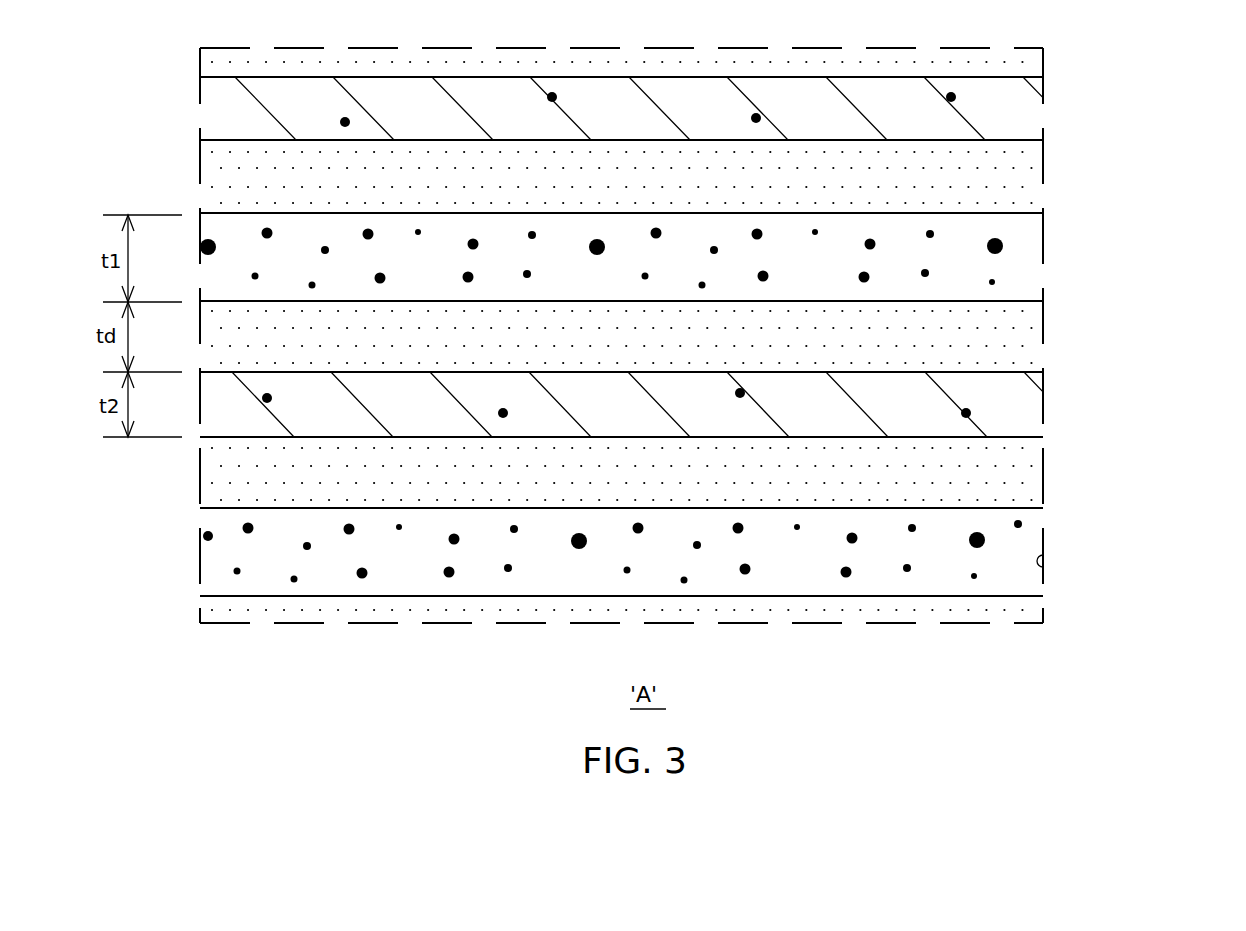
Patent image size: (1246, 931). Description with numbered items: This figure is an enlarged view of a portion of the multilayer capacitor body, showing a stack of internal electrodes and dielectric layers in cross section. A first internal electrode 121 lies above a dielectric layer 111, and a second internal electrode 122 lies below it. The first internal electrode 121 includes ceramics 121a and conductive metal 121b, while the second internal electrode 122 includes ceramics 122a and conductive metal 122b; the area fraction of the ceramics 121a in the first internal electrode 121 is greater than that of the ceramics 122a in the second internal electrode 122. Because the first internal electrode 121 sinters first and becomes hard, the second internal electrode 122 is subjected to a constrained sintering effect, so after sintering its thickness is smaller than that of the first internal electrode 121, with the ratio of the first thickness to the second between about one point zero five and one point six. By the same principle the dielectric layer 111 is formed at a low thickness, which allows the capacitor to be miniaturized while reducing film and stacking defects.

The dielectric layer 111 is at (1022, 334).
The first internal electrode 121 is at (1183, 203).
The ceramics 121a is at (1003, 245).
The conductive metal 121b is at (1020, 274).
The second internal electrode 122 is at (1183, 398).
The ceramics 122a is at (972, 411).
The conductive metal 122b is at (1028, 420).